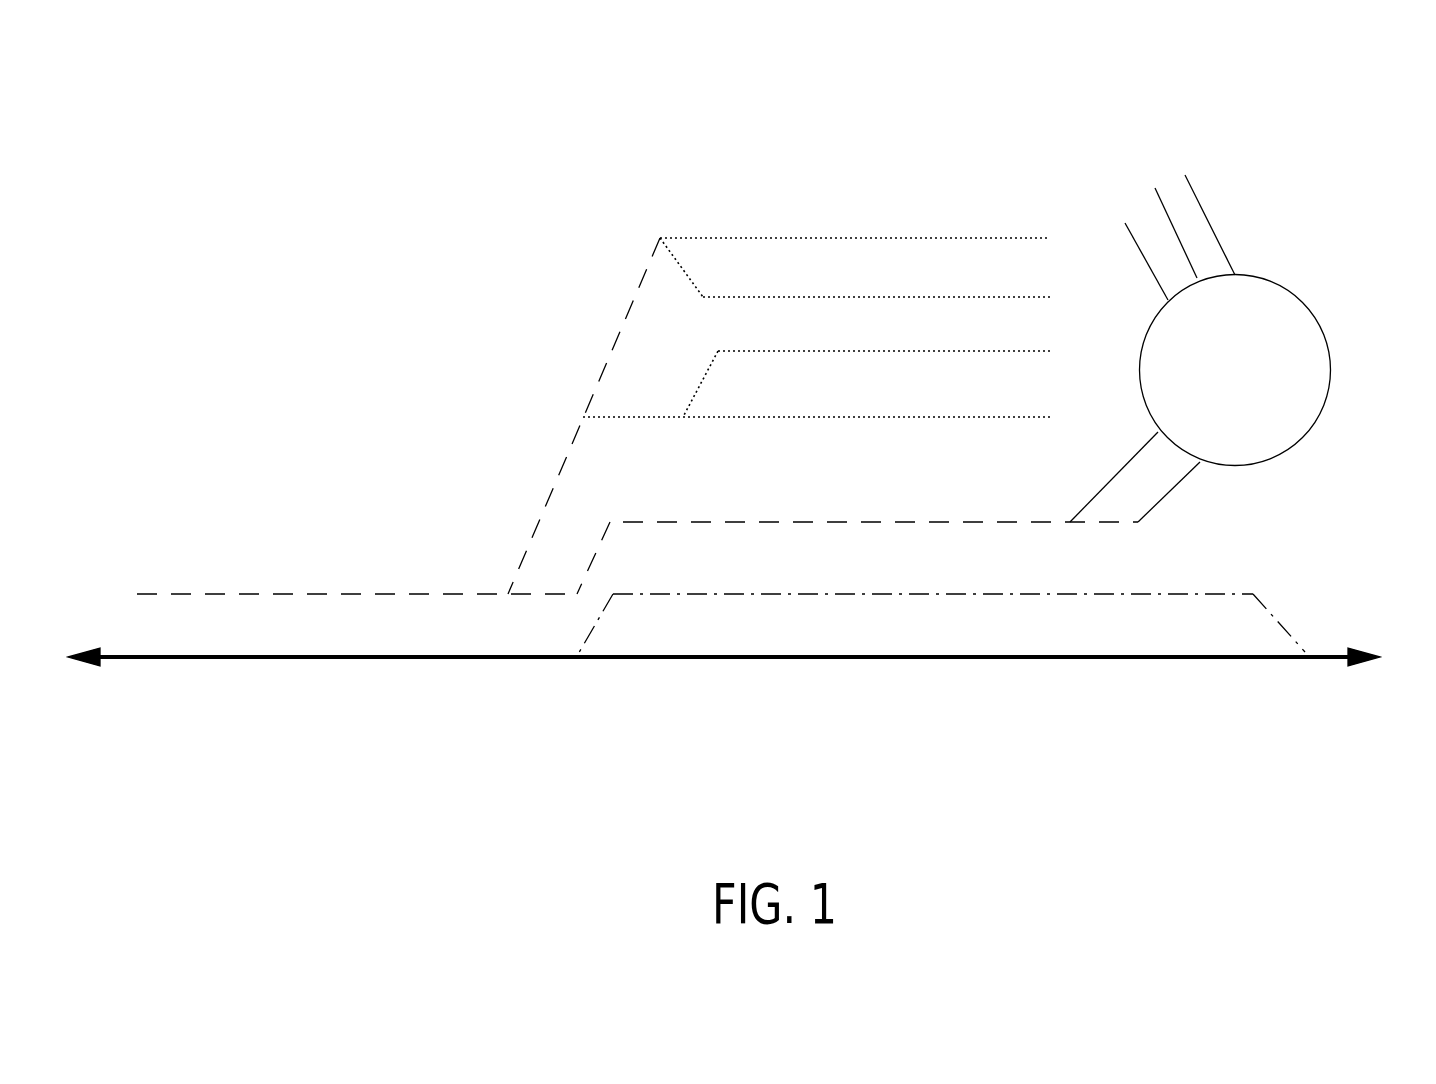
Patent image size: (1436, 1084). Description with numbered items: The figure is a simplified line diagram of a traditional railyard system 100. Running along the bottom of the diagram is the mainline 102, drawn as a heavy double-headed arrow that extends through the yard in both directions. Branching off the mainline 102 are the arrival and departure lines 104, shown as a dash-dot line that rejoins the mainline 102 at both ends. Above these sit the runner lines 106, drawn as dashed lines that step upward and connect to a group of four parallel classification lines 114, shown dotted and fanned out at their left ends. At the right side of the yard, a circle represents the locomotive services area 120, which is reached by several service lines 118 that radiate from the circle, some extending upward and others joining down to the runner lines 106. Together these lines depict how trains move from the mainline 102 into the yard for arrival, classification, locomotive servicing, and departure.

The traditional railyard system 100 is at (1345, 115).
The mainline 102 is at (705, 661).
The arrival and departure lines 104 is at (940, 594).
The runner lines 106 is at (573, 446).
The classification lines 114 is at (922, 238).
The service lines 118 is at (1128, 226).
The locomotive services area 120 is at (1328, 343).